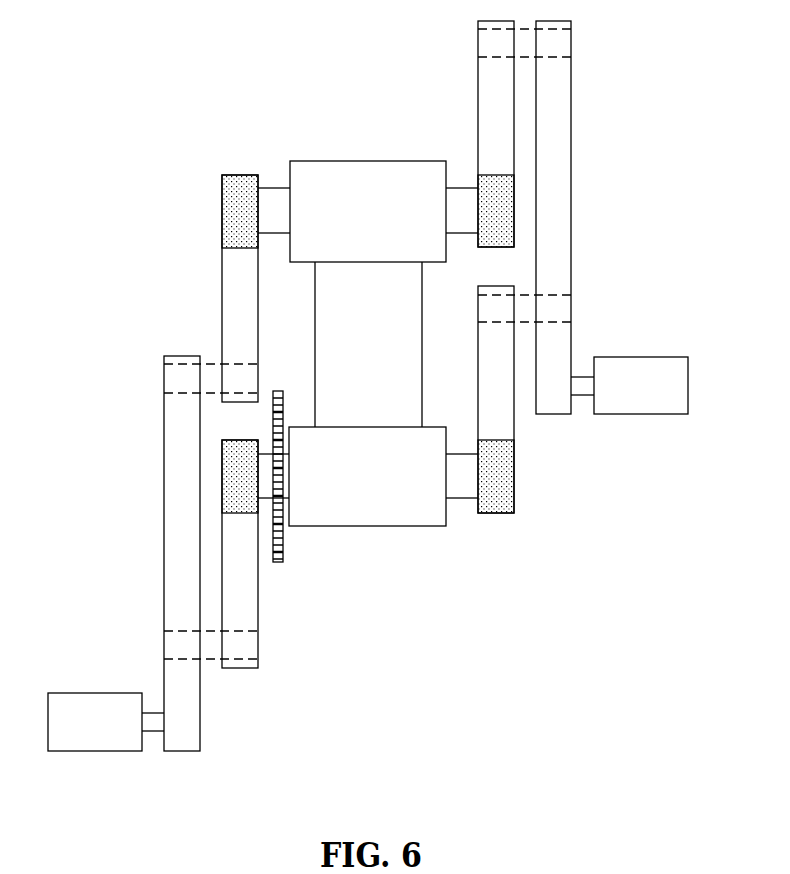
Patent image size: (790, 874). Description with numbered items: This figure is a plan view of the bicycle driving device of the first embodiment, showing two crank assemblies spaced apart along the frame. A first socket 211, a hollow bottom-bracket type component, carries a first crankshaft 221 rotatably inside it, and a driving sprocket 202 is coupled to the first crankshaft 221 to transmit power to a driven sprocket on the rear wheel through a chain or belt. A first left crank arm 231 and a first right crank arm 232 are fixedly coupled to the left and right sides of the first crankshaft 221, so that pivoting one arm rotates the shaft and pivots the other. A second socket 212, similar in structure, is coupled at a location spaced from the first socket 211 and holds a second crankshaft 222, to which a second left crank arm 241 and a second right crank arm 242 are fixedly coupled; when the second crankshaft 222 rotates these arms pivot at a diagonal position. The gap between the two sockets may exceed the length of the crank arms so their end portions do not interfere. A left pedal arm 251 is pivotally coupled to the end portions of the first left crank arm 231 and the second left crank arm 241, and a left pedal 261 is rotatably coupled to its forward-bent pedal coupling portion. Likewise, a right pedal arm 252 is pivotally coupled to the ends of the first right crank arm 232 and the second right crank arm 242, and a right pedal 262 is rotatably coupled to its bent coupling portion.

The driving sprocket 202 is at (279, 563).
The first socket 211 is at (387, 522).
The second socket 212 is at (387, 168).
The first crankshaft 221 is at (462, 493).
The second crankshaft 222 is at (276, 196).
The first left crank arm 231 is at (508, 432).
The first right crank arm 232 is at (226, 575).
The second left crank arm 241 is at (478, 70).
The second right crank arm 242 is at (228, 274).
The left pedal arm 251 is at (567, 152).
The right pedal arm 252 is at (168, 480).
The left pedal 261 is at (645, 408).
The right pedal 262 is at (90, 745).